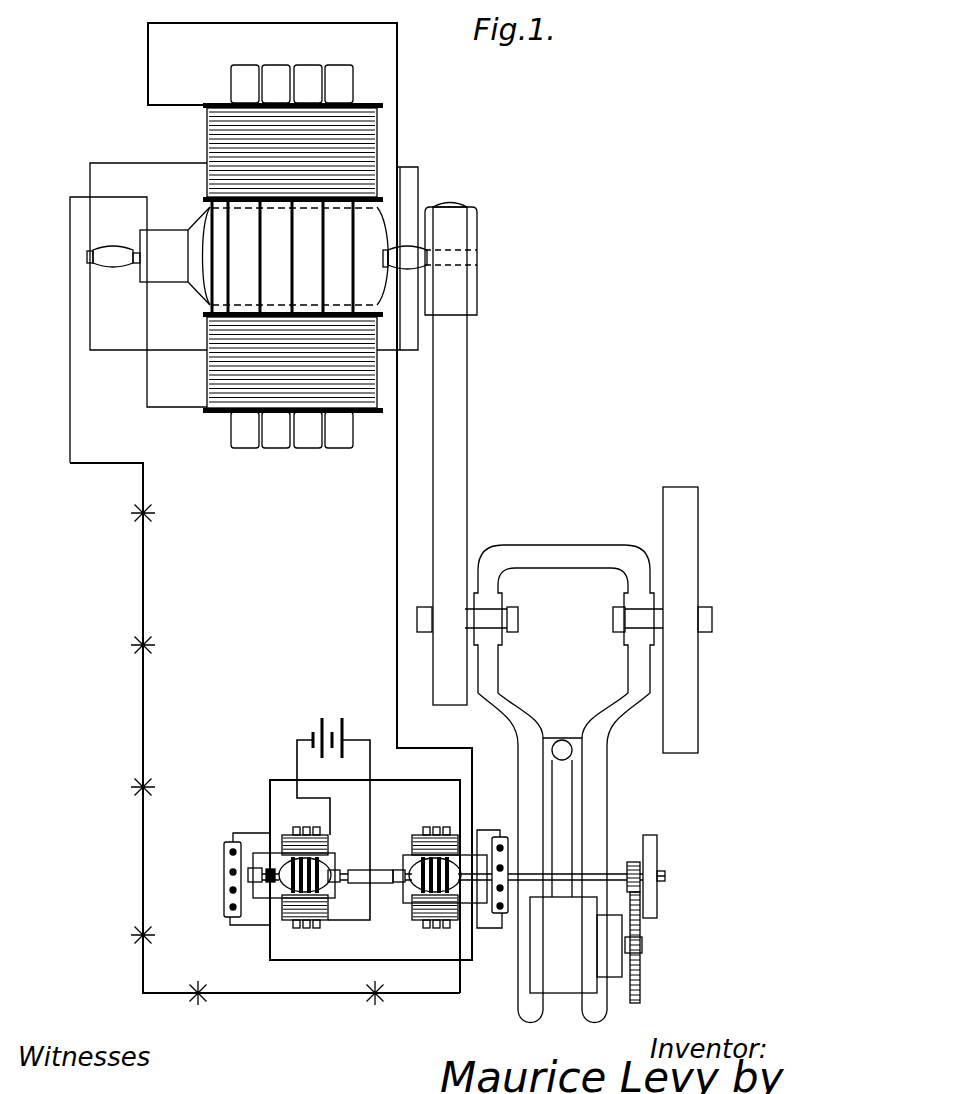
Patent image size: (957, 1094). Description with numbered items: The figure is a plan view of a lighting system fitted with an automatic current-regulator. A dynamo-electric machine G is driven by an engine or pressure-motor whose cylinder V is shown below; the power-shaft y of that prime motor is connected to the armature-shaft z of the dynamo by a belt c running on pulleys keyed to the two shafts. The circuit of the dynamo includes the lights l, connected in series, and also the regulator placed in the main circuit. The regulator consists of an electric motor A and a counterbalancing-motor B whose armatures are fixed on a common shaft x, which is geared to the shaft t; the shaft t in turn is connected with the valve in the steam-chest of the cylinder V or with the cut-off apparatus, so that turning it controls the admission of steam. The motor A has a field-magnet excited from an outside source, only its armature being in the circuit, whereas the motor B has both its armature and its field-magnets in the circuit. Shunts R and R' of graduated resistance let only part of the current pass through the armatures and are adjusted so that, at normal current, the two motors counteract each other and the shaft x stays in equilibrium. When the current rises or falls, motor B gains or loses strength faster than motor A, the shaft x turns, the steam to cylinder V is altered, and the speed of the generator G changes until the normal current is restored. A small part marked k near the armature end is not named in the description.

The dynamo-electric machine G is at (264, 256).
The armature-shaft z is at (289, 246).
The belt c is at (451, 454).
The power-shaft y is at (564, 783).
The cylinder V is at (576, 945).
The common shaft x is at (653, 876).
The shaft t is at (642, 945).
The lights l is at (265, 748).
The shunt R is at (231, 879).
The shunt R' is at (492, 867).
The commutator bearing k is at (261, 871).
The electric motor A is at (299, 877).
The counterbalancing-motor B is at (436, 877).